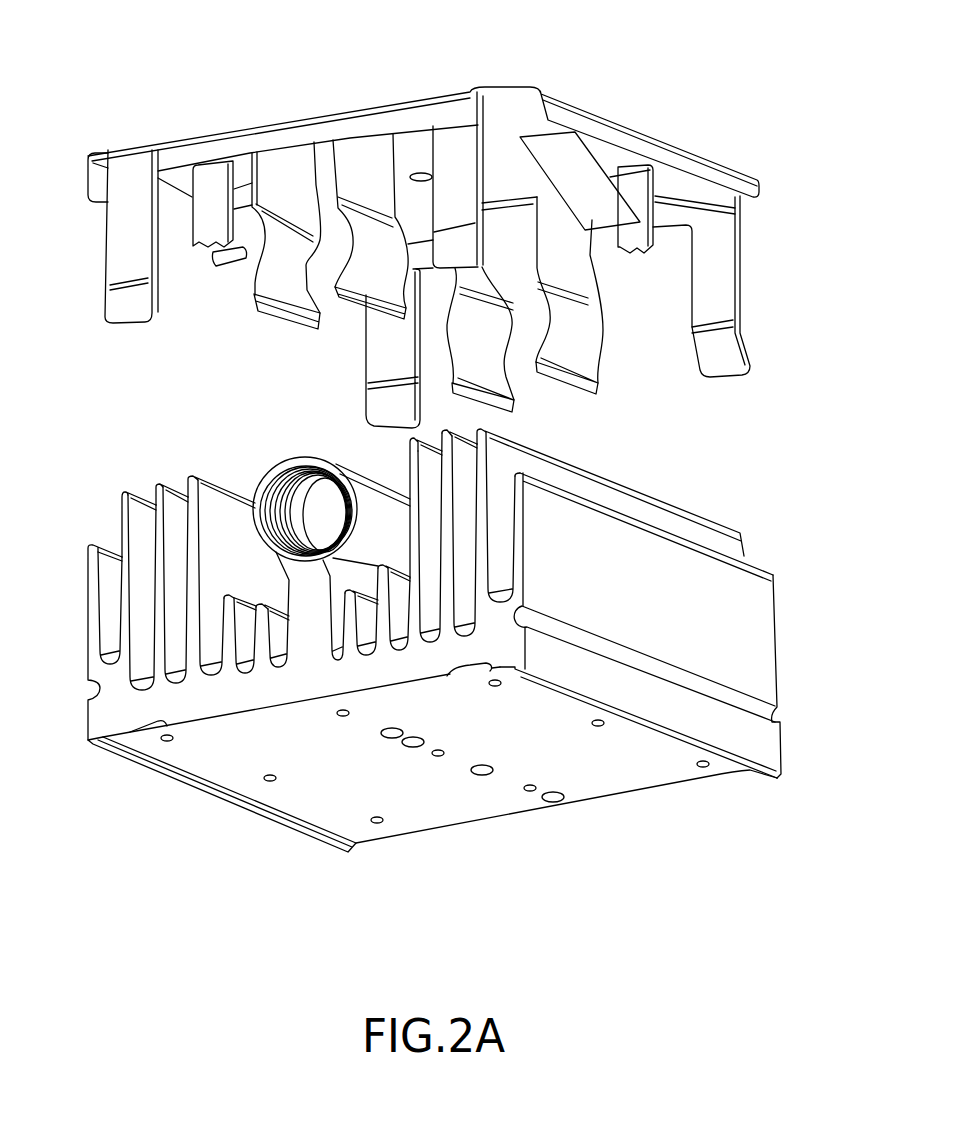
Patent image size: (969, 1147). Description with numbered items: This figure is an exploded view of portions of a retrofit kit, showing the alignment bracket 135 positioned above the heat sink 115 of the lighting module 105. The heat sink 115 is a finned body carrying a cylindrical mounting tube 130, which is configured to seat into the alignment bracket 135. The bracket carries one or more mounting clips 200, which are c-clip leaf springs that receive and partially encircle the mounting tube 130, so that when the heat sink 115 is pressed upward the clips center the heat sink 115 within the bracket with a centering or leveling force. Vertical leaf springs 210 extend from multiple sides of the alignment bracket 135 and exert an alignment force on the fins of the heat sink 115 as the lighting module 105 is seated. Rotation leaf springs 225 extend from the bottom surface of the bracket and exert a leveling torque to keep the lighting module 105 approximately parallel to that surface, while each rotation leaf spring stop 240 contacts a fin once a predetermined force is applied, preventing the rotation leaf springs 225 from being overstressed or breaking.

The lighting module 105 is at (606, 847).
The heat sink 115 is at (762, 650).
The mounting tube 130 is at (300, 460).
The alignment bracket 135 is at (250, 80).
The mounting clip 200 is at (590, 343).
The vertical leaf spring 210 is at (755, 343).
The rotation leaf spring 225 is at (574, 164).
The rotation leaf spring stop 240 is at (212, 231).